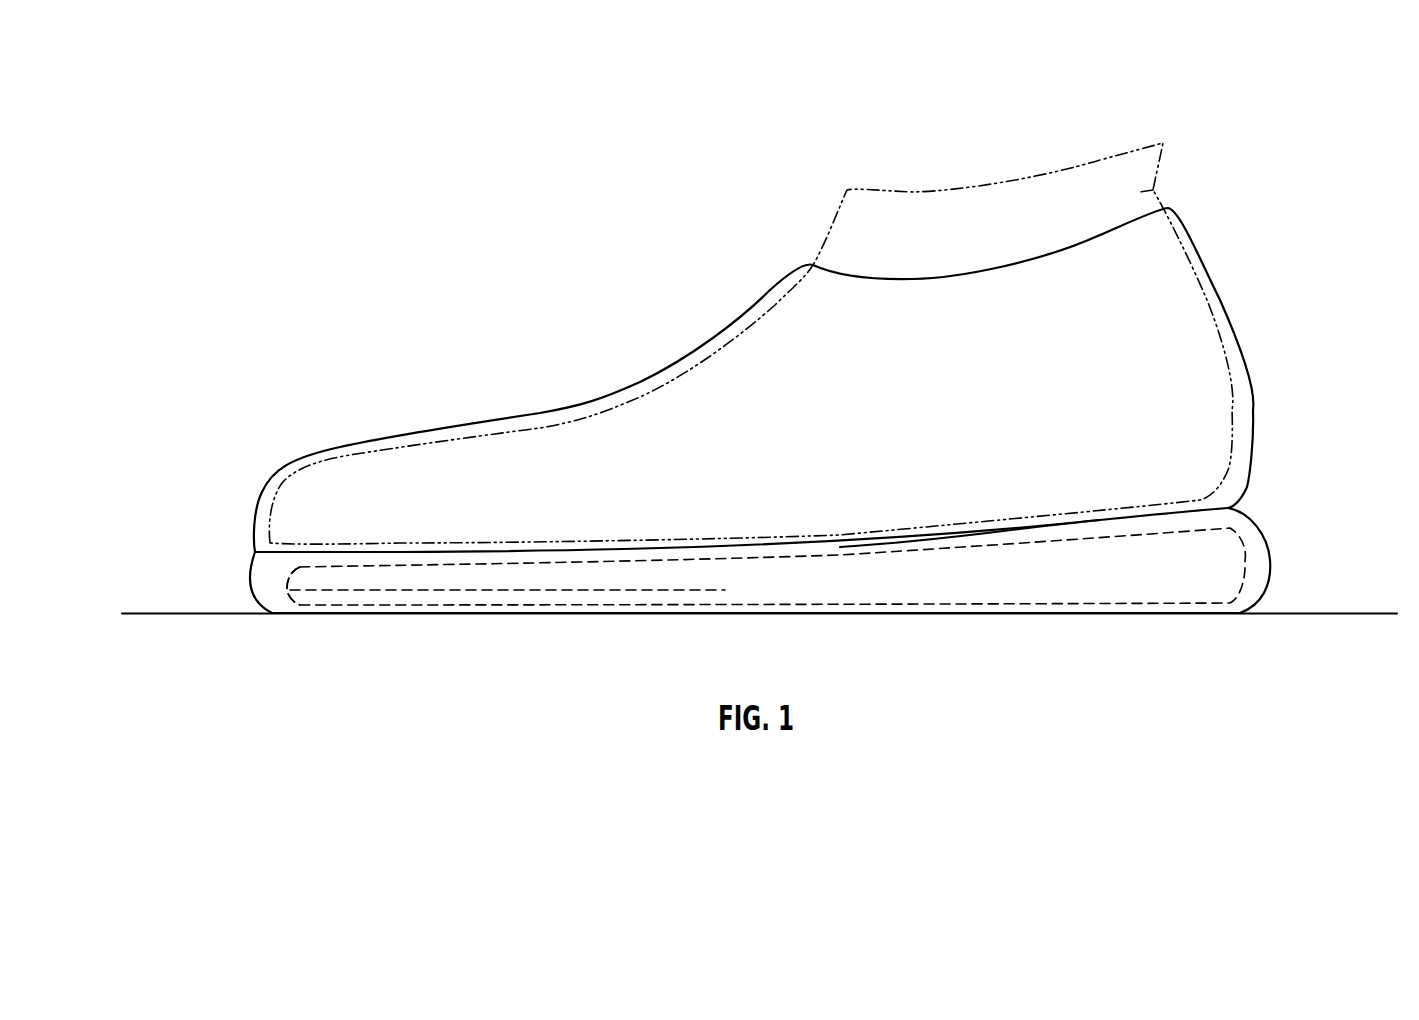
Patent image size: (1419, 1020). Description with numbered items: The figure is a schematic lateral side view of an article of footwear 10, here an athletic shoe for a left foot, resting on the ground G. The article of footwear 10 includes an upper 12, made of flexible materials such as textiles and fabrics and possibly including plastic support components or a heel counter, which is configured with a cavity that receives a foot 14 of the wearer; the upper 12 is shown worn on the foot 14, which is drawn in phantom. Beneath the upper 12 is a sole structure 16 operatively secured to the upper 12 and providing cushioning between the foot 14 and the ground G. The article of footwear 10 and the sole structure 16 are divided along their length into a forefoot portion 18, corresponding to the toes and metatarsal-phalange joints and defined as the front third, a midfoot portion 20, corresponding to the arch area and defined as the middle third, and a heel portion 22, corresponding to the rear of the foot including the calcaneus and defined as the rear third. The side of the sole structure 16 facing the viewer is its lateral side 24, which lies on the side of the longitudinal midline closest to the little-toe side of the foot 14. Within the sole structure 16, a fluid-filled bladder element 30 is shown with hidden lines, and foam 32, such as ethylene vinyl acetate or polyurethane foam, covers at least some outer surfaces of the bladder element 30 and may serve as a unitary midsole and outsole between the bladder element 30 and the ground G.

The article of footwear 10 is at (758, 404).
The upper 12 is at (607, 397).
The foot 14 is at (1153, 190).
The sole structure 16 is at (250, 580).
The forefoot portion 18 is at (483, 616).
The midfoot portion 20 is at (832, 617).
The heel portion 22 is at (1167, 615).
The lateral side 24 is at (960, 582).
The fluid-filled bladder element 30 is at (1245, 560).
The foam 32 is at (288, 605).
The ground G is at (147, 613).